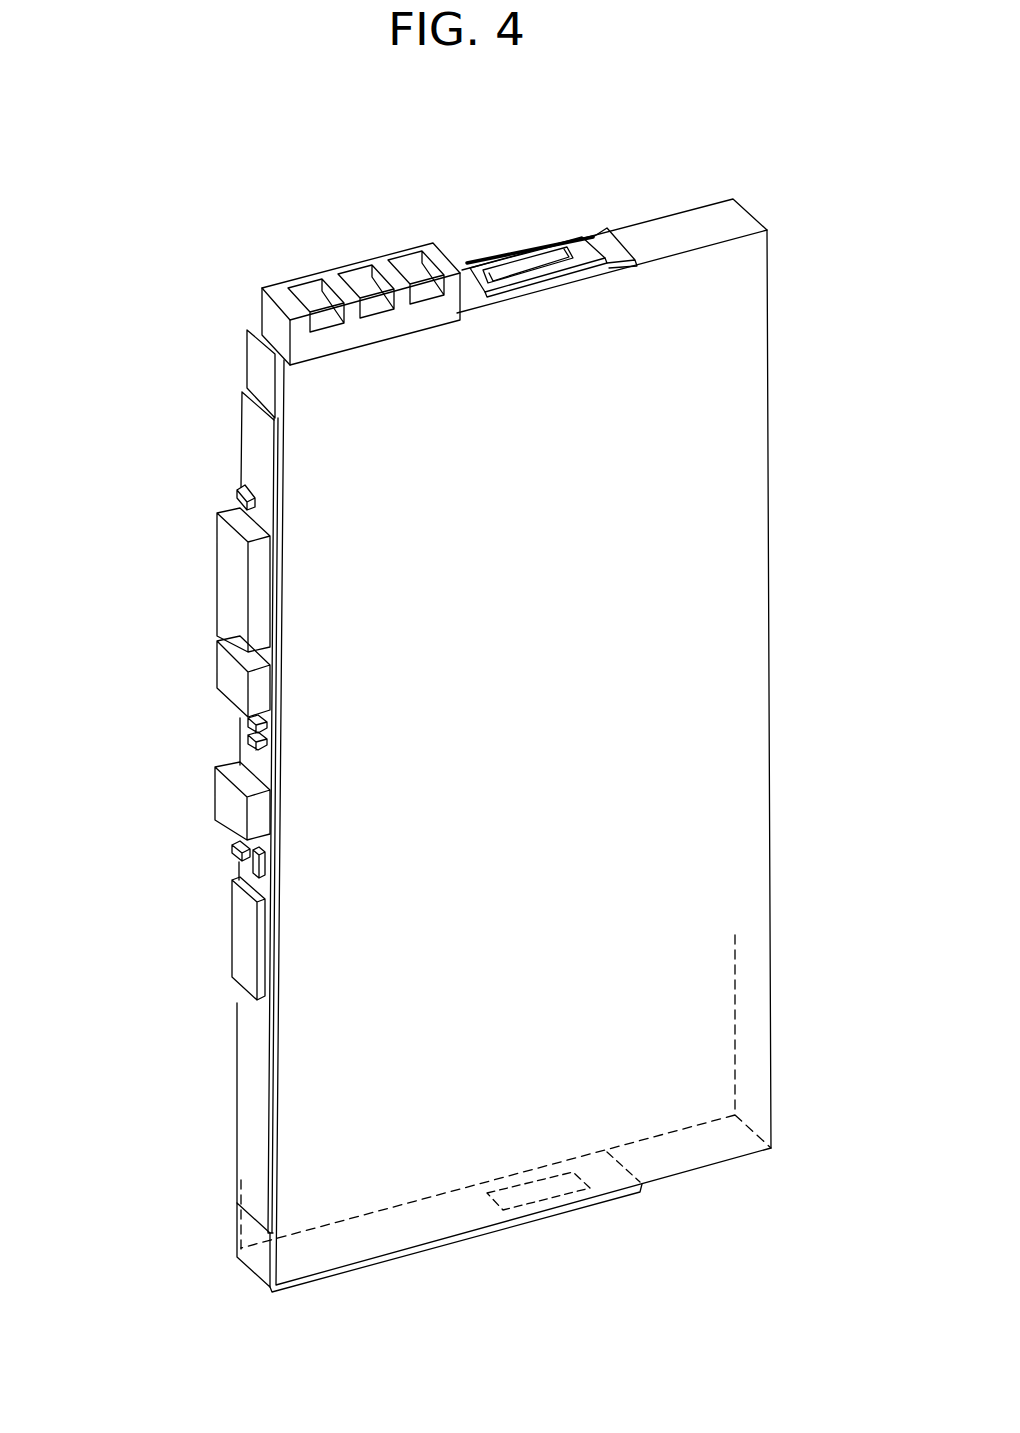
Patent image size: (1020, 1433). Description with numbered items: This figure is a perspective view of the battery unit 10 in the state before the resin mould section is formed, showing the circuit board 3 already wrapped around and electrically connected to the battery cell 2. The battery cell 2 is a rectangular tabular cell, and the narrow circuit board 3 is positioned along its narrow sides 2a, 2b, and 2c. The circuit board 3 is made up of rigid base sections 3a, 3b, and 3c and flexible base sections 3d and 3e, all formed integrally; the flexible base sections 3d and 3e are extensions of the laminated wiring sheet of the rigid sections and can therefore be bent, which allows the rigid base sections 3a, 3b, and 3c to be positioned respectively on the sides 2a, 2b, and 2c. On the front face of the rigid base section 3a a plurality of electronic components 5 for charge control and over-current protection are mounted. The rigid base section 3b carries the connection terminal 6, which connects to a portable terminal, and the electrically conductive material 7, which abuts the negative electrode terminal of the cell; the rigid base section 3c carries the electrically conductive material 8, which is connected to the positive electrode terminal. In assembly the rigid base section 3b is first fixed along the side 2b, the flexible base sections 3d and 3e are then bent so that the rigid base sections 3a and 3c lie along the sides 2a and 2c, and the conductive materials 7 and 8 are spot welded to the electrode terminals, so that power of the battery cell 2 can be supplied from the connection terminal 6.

The battery unit 10 is at (222, 200).
The battery cell 2 is at (755, 270).
The side of battery cell 2a is at (258, 1232).
The side of battery cell 2b is at (710, 216).
The side of battery cell 2c is at (712, 1157).
The circuit board 3 is at (232, 441).
The rigid base section 3a is at (248, 1050).
The rigid base section 3b is at (597, 233).
The rigid base section 3c is at (402, 1255).
The flexible base section 3d is at (258, 366).
The flexible base section 3e is at (247, 1268).
The electronic components 5 is at (184, 668).
The connection terminal 6 is at (352, 343).
The electrically conductive material 7 is at (547, 242).
The electrically conductive material 8 is at (525, 1193).